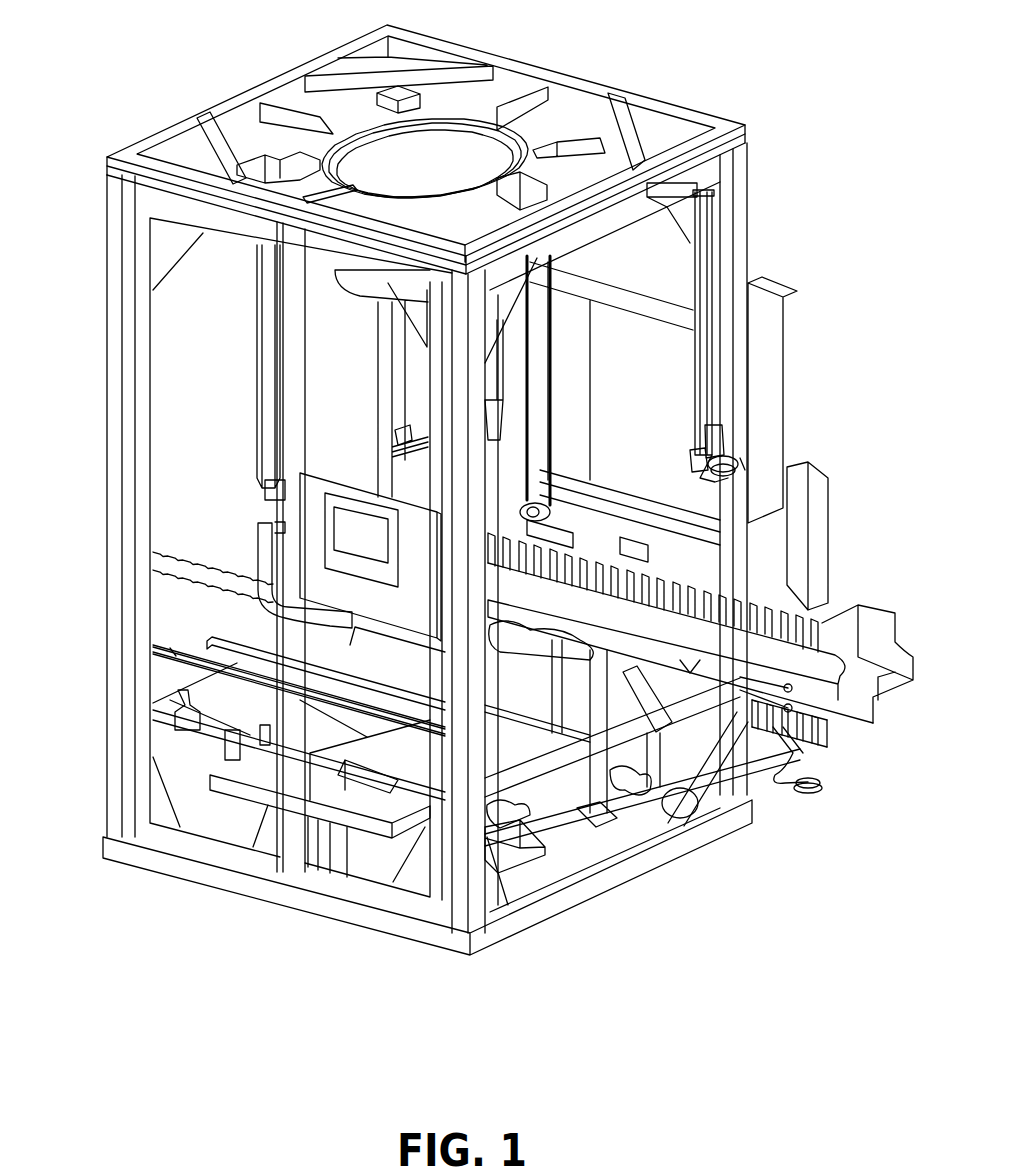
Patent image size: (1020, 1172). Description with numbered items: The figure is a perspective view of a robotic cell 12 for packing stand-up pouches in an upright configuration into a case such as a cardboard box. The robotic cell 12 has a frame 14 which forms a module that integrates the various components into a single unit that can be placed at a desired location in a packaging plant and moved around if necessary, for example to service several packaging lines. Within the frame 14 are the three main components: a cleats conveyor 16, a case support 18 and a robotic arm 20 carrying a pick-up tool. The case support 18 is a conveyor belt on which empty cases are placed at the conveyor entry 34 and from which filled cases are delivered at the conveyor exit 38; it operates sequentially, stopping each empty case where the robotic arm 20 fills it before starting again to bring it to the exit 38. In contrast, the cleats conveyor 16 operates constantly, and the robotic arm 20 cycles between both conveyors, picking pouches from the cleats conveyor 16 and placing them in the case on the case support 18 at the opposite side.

The robotic cell 12 is at (465, 490).
The frame 14 is at (722, 201).
The cleats conveyor 16 is at (648, 622).
The case support 18 is at (363, 737).
The robotic arm 20 is at (737, 450).
The conveyor entry 34 is at (540, 783).
The conveyor exit 38 is at (179, 722).